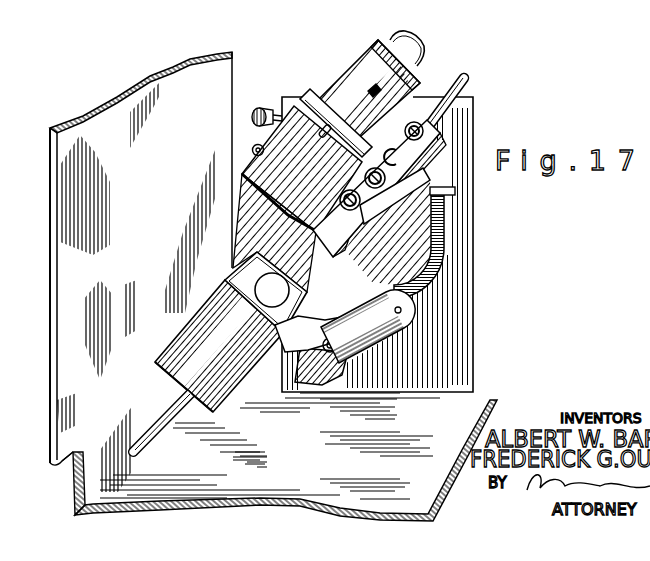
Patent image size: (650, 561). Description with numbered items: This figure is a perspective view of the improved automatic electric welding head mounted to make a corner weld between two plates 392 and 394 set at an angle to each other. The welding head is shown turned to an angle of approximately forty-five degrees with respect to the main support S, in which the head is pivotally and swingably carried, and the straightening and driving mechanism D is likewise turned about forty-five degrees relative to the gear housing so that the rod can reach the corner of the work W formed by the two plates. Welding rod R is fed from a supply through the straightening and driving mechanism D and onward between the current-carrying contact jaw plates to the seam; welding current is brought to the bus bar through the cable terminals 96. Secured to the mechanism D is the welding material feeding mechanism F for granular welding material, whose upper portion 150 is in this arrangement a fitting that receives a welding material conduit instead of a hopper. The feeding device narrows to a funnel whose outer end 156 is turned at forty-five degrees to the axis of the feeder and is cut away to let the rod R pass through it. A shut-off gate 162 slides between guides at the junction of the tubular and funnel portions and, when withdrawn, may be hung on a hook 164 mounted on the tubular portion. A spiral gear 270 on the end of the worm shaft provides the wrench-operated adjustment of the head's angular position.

The plate 392 is at (62, 163).
The plate 394 is at (493, 400).
The upper portion 150 is at (408, 47).
The hook 164 is at (380, 95).
The shut-off gate 162 is at (312, 100).
The spiral gear 270 is at (258, 108).
The outer end 156 is at (214, 406).
The cable terminals 96 is at (385, 348).
The welding material feeding mechanism F is at (358, 60).
The welding rod R is at (149, 433).
The welding rod straightening and driving mechanism D is at (426, 172).
The main support S is at (473, 250).
The work W is at (100, 482).